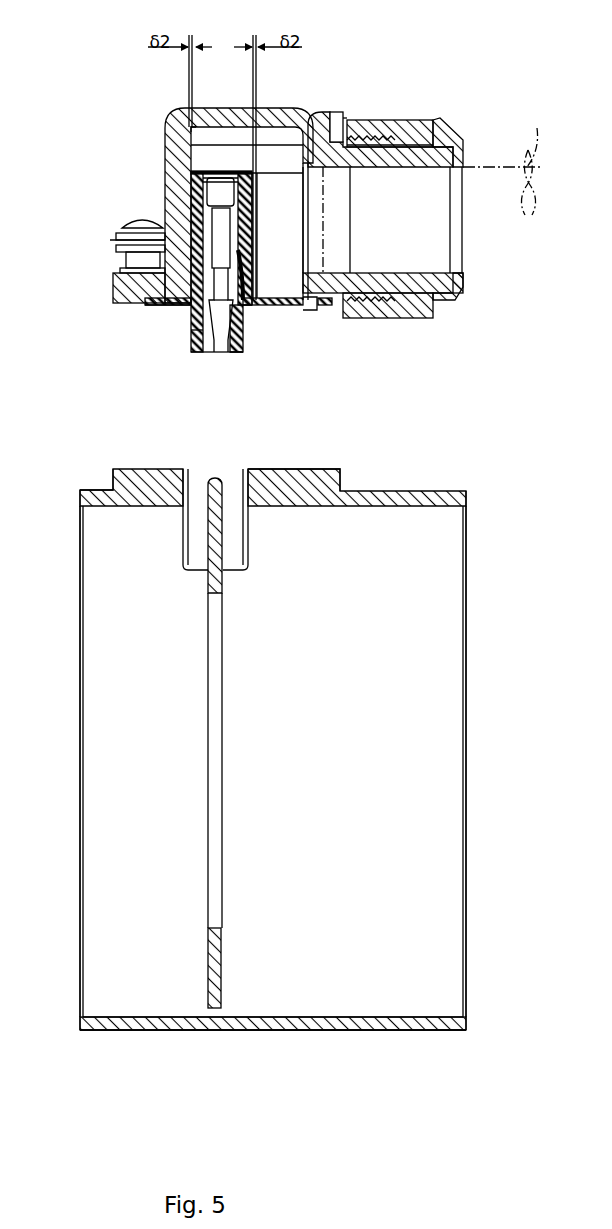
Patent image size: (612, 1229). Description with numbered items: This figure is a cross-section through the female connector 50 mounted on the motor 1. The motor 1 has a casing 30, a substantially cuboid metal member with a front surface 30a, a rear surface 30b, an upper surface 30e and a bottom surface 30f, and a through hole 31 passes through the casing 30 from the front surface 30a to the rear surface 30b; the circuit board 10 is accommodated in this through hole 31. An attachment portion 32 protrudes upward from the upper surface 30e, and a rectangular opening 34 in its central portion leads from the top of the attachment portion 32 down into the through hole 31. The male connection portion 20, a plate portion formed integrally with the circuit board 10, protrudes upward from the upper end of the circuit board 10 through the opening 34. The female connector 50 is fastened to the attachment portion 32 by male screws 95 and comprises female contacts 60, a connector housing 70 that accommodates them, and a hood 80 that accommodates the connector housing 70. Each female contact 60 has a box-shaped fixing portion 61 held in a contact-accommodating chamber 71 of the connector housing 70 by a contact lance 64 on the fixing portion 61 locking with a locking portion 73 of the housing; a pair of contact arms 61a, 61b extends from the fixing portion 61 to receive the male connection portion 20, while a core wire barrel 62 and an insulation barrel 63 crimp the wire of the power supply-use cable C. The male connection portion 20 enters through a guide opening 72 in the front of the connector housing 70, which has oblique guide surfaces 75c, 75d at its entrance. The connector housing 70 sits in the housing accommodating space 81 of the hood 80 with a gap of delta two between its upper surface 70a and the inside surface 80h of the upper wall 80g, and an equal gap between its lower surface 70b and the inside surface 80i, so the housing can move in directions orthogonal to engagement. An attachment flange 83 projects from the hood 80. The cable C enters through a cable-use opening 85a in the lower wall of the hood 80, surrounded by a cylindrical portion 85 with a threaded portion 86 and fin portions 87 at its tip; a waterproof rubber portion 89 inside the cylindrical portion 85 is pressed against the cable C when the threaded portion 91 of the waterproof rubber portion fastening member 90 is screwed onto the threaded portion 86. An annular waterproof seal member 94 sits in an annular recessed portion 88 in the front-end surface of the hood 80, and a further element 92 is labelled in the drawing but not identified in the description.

The motor 1 is at (472, 457).
The circuit board 10 is at (223, 958).
The male connection portion 20 is at (212, 500).
The casing 30 is at (108, 1032).
The front surface 30a is at (80, 578).
The rear surface 30b is at (466, 582).
The upper surface 30e is at (98, 490).
The bottom surface 30f is at (172, 1032).
The through hole 31 is at (405, 1017).
The attachment portion 32 is at (320, 476).
The opening 34 is at (246, 488).
The female connector 50 is at (452, 108).
The female contact 60 is at (190, 330).
The fixing portion 61 is at (150, 302).
The contact arm 61a is at (198, 352).
The contact arm 61b is at (240, 352).
The core wire barrel 62 is at (215, 240).
The insulation barrel 63 is at (212, 193).
The contact lance 64 is at (244, 284).
The connector housing 70 is at (247, 176).
The upper surface 70a is at (145, 244).
The lower surface 70b is at (252, 215).
The contact-accommodating chamber 71 is at (214, 178).
The guide opening 72 is at (220, 354).
The locking portion 73 is at (266, 304).
The oblique guide surface 75c is at (210, 354).
The oblique guide surface 75d is at (230, 354).
The hood 80 is at (182, 114).
The upper wall 80g is at (197, 145).
The inside surface 80h is at (190, 140).
The inside surface 80i is at (258, 226).
The housing accommodating space 81 is at (230, 150).
The attachment flange 83 is at (113, 284).
The cylindrical portion 85 is at (333, 134).
The cable-use opening 85a is at (304, 272).
The threaded portion 86 is at (375, 138).
The fin portion 87 is at (420, 130).
The annular recessed portion 88 is at (325, 306).
The waterproof rubber portion 89 is at (440, 300).
The waterproof rubber portion fastening member 90 is at (462, 130).
The threaded portion 91 is at (393, 140).
The lower nut 92 is at (370, 318).
The annular waterproof seal member 94 is at (165, 306).
The male screw 95 is at (130, 220).
The power supply-use cable C is at (504, 161).